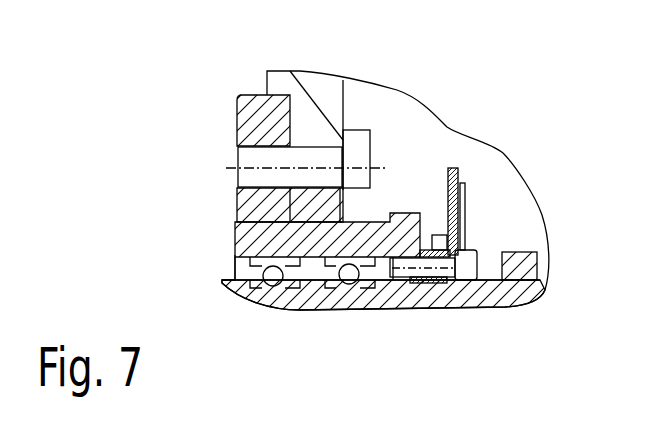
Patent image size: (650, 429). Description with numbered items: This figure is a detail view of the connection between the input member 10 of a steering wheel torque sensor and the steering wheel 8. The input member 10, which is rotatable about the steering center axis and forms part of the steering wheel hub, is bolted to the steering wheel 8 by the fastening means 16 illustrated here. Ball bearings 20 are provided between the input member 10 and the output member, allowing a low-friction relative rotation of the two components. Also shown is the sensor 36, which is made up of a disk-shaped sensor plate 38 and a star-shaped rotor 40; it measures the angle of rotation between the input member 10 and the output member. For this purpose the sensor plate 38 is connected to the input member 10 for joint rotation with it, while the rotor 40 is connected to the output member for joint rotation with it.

The steering wheel 8 is at (317, 92).
The input member 10 is at (245, 210).
The fastening means 16 is at (237, 157).
The ball bearings 20 is at (333, 295).
The sensor 36 is at (466, 143).
The sensor plate 38 is at (452, 168).
The rotor 40 is at (465, 183).